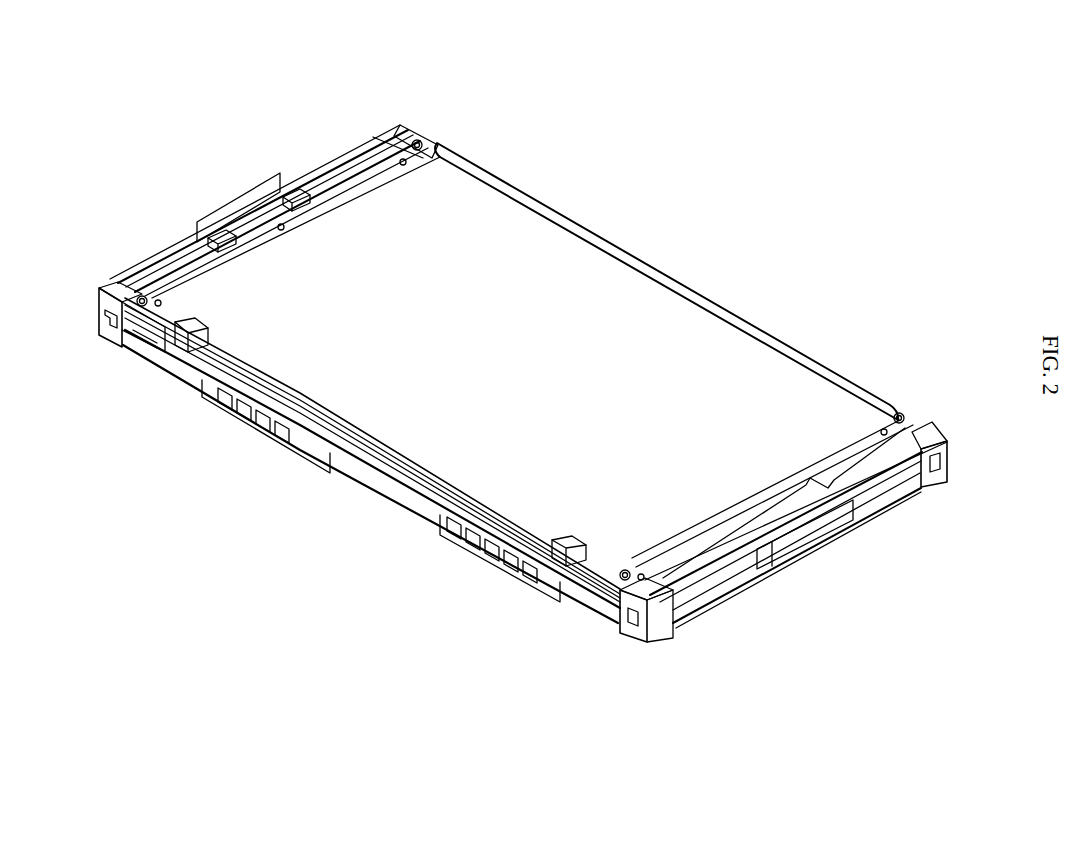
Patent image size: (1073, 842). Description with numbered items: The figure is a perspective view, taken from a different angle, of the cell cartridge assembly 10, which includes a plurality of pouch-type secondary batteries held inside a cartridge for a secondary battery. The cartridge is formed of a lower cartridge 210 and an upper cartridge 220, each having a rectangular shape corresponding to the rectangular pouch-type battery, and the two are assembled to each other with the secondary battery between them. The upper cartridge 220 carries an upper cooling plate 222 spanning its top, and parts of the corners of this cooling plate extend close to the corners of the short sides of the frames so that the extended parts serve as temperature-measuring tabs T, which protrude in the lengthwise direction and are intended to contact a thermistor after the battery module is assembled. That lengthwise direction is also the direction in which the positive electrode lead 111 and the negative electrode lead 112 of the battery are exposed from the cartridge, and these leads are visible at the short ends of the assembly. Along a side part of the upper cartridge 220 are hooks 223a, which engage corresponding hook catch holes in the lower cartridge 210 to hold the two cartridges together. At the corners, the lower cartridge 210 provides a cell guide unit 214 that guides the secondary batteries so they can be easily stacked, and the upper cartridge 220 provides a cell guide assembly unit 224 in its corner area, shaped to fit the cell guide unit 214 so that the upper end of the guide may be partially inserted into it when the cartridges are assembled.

The cell cartridge assembly 10 is at (268, 76).
The positive electrode lead 111 is at (817, 533).
The negative electrode lead 112 is at (227, 205).
The lower cartridge 210 is at (387, 508).
The cell guide unit 214 is at (98, 328).
The upper cartridge 220 is at (340, 438).
The upper cooling plate 222 is at (705, 327).
The hook 223a is at (233, 410).
The cell guide assembly unit 224 is at (104, 288).
The temperature-measuring tabs T is at (340, 173).